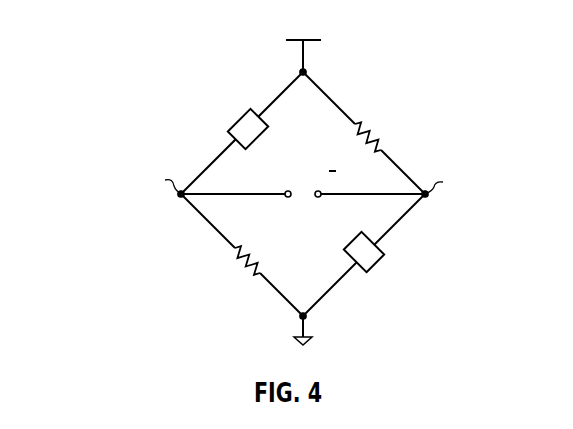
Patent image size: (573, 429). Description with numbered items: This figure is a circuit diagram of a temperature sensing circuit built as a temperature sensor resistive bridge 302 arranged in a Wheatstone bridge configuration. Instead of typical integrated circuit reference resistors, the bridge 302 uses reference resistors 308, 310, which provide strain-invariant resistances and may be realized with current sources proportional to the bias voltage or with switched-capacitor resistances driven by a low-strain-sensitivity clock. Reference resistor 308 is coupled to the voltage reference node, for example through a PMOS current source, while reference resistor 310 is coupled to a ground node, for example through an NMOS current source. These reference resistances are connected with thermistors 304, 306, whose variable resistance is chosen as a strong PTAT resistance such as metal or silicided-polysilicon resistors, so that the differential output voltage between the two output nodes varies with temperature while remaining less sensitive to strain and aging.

The temperature sensor resistive bridge 302 is at (259, 179).
The thermistor 304 is at (378, 141).
The thermistor 306 is at (236, 251).
The reference resistor 308 is at (228, 133).
The reference resistor 310 is at (387, 248).